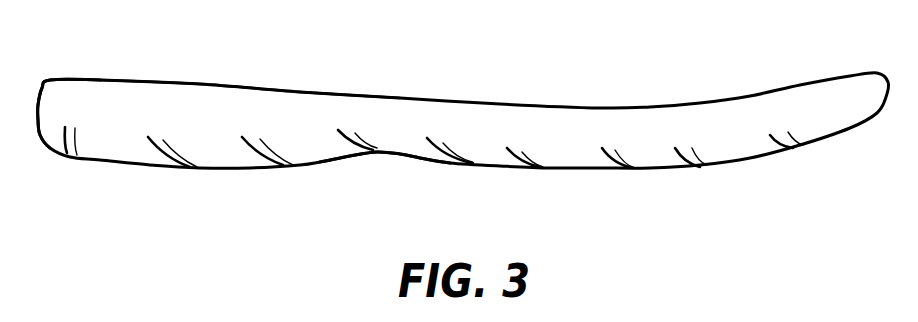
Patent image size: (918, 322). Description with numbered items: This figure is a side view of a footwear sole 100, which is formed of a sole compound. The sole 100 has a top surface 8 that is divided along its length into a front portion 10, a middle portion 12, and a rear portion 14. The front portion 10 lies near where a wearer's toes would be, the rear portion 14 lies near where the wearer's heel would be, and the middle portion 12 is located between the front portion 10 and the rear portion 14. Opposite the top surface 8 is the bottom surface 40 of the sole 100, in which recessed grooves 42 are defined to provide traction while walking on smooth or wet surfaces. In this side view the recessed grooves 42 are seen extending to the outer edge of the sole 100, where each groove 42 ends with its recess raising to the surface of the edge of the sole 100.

The sole 100 is at (463, 137).
The front portion 10 is at (777, 95).
The top surface 8 is at (155, 80).
The rear portion 14 is at (91, 78).
The middle portion 12 is at (402, 128).
The bottom surface 40 is at (226, 162).
The recessed grooves 42 is at (473, 163).